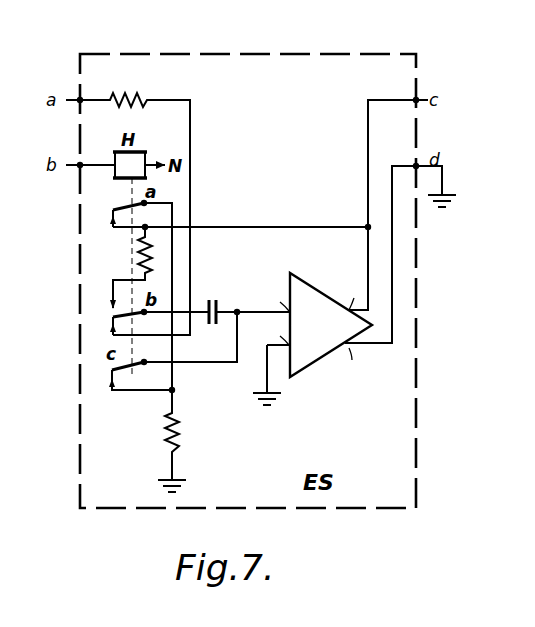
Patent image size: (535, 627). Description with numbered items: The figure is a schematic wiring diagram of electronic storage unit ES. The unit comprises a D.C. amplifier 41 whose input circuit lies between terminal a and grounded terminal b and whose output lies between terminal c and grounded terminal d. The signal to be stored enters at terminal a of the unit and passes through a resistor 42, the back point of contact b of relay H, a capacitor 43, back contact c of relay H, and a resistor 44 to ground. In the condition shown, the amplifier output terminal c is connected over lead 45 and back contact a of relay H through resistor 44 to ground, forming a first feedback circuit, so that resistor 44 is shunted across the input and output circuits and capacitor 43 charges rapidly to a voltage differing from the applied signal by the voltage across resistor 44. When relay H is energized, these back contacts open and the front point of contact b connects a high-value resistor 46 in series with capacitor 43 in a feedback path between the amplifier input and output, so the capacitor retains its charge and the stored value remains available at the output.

The D.C. amplifier 41 is at (318, 362).
The resistor 42 is at (138, 98).
The capacitor 43 is at (212, 300).
The resistor 44 is at (180, 438).
The lead 45 is at (303, 212).
The resistor 46 is at (140, 258).